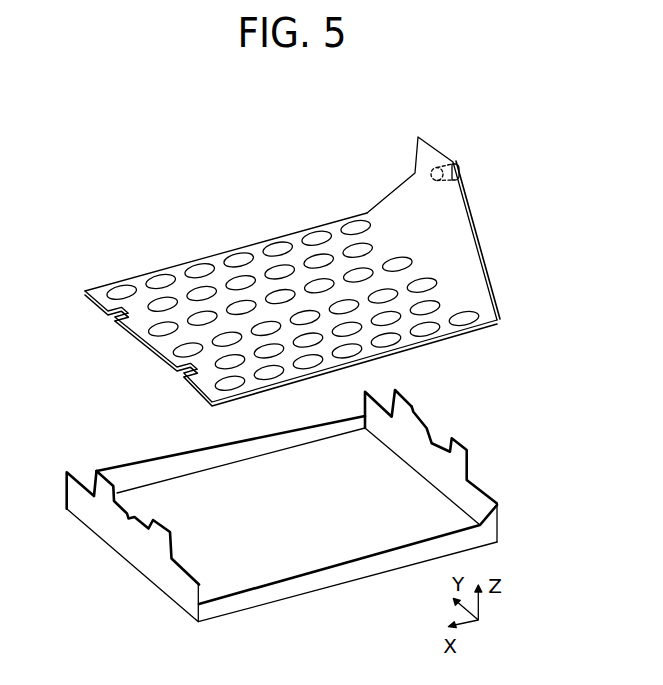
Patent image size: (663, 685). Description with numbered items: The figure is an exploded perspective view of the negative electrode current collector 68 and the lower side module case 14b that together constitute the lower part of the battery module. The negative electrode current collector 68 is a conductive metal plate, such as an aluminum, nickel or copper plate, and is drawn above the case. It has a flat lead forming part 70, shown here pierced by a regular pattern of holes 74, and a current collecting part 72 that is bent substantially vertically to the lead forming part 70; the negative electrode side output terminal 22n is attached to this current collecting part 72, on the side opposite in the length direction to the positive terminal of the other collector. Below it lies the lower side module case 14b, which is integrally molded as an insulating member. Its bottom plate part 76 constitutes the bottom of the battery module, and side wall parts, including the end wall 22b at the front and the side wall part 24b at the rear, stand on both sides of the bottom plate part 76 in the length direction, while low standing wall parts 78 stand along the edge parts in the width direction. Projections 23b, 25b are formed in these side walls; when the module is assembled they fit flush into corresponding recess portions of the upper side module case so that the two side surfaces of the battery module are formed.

The negative electrode current collector 68 is at (487, 284).
The lead forming part 70 is at (150, 273).
The current collecting part 72 is at (471, 245).
The through holes 74 is at (271, 242).
The negative electrode side output terminal 22n is at (461, 168).
The lower side module case 14b is at (504, 529).
The bottom plate part 76 is at (324, 541).
The low standing wall parts 78 is at (178, 456).
The front end wall 22b is at (93, 513).
The projection 23b is at (175, 545).
The side wall part 24b is at (484, 484).
The projection 25b is at (473, 457).